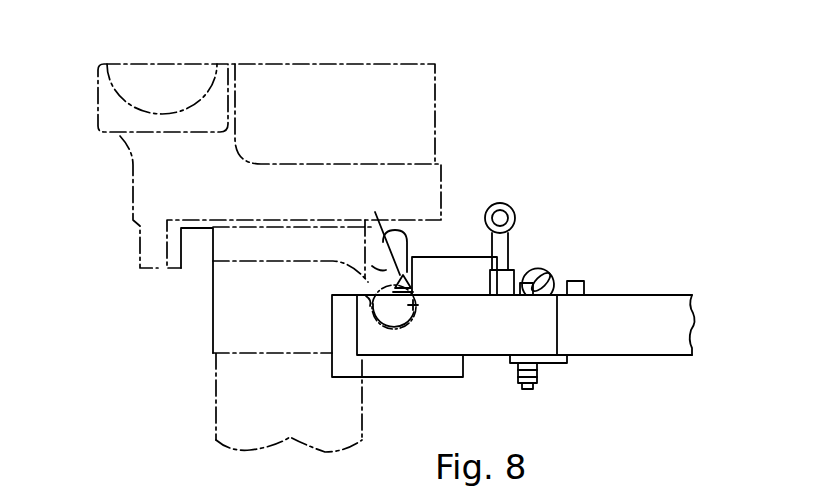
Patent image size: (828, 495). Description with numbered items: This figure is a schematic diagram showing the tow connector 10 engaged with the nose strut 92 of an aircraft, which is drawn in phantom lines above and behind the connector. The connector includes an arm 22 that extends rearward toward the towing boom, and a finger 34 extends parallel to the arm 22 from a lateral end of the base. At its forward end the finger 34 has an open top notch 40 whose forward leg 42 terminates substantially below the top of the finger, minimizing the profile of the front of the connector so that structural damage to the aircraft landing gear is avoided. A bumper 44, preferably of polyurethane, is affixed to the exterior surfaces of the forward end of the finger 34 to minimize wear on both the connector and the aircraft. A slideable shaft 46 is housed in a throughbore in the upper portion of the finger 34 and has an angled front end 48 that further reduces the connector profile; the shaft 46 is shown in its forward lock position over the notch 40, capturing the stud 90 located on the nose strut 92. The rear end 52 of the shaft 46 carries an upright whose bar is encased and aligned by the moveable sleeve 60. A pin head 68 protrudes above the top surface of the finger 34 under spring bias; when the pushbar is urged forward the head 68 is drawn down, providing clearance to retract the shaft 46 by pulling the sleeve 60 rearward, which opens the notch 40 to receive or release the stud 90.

The tow connector 10 is at (526, 230).
The arm 22 is at (680, 320).
The finger 34 is at (547, 345).
The open top notch 40 is at (401, 330).
The forward leg 42 is at (367, 299).
The bumper 44 is at (439, 367).
The slideable shaft 46 is at (378, 230).
The angled front end 48 is at (383, 274).
The rear end 52 is at (518, 263).
The moveable sleeve 60 is at (500, 202).
The head 68 is at (556, 282).
The stud 90 is at (420, 305).
The nose strut 92 is at (250, 388).